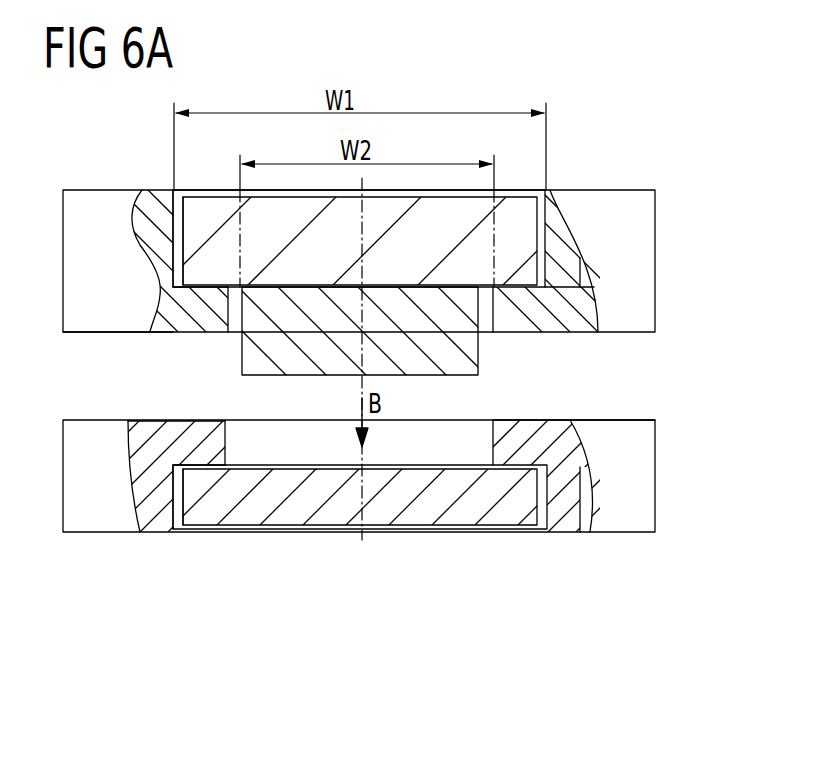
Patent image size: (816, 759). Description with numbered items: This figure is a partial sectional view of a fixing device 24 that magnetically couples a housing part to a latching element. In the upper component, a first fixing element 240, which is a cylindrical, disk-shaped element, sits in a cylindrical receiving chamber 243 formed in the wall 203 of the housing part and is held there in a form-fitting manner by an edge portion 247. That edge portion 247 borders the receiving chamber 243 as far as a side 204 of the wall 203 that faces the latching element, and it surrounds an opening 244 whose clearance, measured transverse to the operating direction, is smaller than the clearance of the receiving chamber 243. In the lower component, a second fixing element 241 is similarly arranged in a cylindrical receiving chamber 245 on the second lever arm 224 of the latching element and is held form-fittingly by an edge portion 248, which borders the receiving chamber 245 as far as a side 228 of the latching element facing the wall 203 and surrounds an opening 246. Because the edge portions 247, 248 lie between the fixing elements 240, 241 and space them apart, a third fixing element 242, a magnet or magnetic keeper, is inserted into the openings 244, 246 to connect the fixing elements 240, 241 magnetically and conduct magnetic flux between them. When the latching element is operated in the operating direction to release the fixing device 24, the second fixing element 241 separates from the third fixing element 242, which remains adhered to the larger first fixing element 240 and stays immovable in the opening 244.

The fixing device 24 is at (637, 177).
The wall 203 is at (635, 273).
The side 204 is at (95, 333).
The second lever arm 224 is at (640, 490).
The side 228 is at (600, 394).
The first fixing element 240 is at (452, 210).
The second fixing element 241 is at (502, 510).
The third fixing element 242 is at (453, 357).
The receiving chamber 243 is at (198, 215).
The opening 244 is at (232, 315).
The receiving chamber 245 is at (178, 536).
The opening 246 is at (230, 508).
The edge portion 247 is at (177, 313).
The edge portion 248 is at (196, 411).